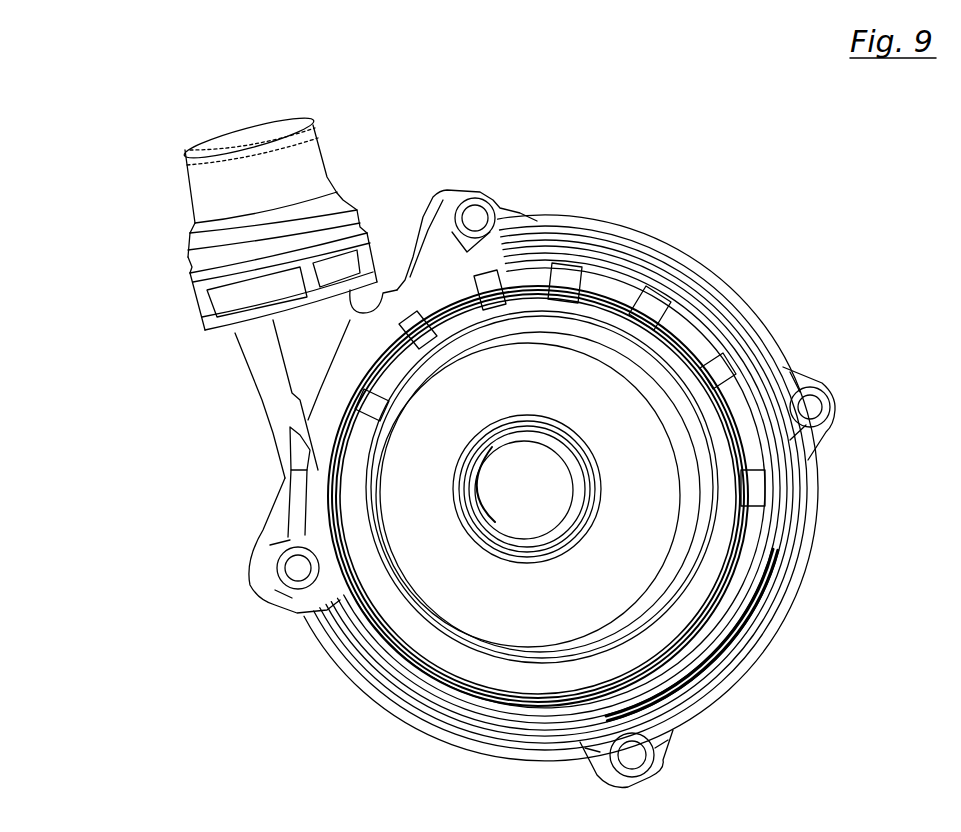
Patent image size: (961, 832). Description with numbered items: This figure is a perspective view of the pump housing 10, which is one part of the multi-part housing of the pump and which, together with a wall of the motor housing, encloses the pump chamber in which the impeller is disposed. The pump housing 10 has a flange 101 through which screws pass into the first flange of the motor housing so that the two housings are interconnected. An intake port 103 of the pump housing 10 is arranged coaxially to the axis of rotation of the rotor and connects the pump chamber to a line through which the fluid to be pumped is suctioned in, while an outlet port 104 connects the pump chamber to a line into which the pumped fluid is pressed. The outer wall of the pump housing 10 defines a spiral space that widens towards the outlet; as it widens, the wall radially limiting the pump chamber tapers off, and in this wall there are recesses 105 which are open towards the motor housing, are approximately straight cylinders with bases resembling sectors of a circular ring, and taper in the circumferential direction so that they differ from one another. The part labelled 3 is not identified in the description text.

The pump housing 10 is at (405, 160).
The housing part 3 is at (317, 333).
The flange 101 is at (367, 675).
The intake port 103 is at (530, 488).
The outlet port 104 is at (223, 172).
The recesses 105 is at (440, 278).